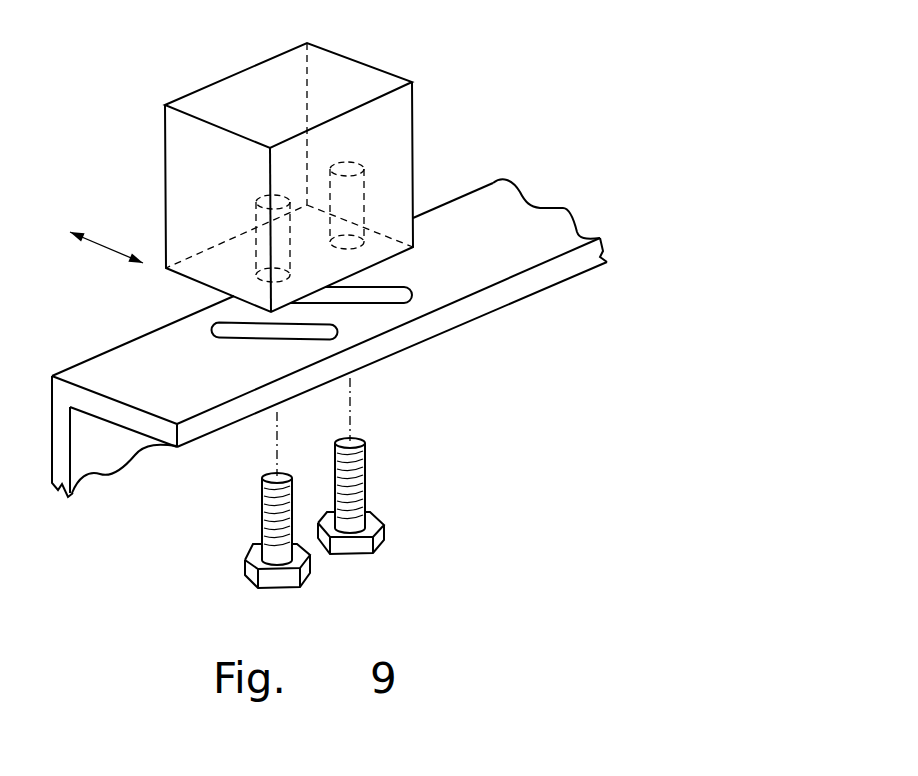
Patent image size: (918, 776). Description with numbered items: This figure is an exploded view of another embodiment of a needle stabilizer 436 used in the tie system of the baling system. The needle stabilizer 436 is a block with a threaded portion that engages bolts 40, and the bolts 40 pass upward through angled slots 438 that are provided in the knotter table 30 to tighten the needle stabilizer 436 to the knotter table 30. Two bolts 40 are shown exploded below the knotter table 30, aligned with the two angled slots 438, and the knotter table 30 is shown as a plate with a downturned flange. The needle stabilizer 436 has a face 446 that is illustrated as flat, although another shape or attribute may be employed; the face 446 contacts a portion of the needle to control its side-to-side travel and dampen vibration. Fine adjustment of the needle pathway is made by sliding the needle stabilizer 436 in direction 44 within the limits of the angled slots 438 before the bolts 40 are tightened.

The knotter table 30 is at (197, 384).
The bolts 40 is at (392, 493).
The stabilizer adjustment direction 44 is at (102, 250).
The needle stabilizer 436 is at (412, 82).
The angled slots 438 is at (226, 324).
The face 446 is at (127, 122).